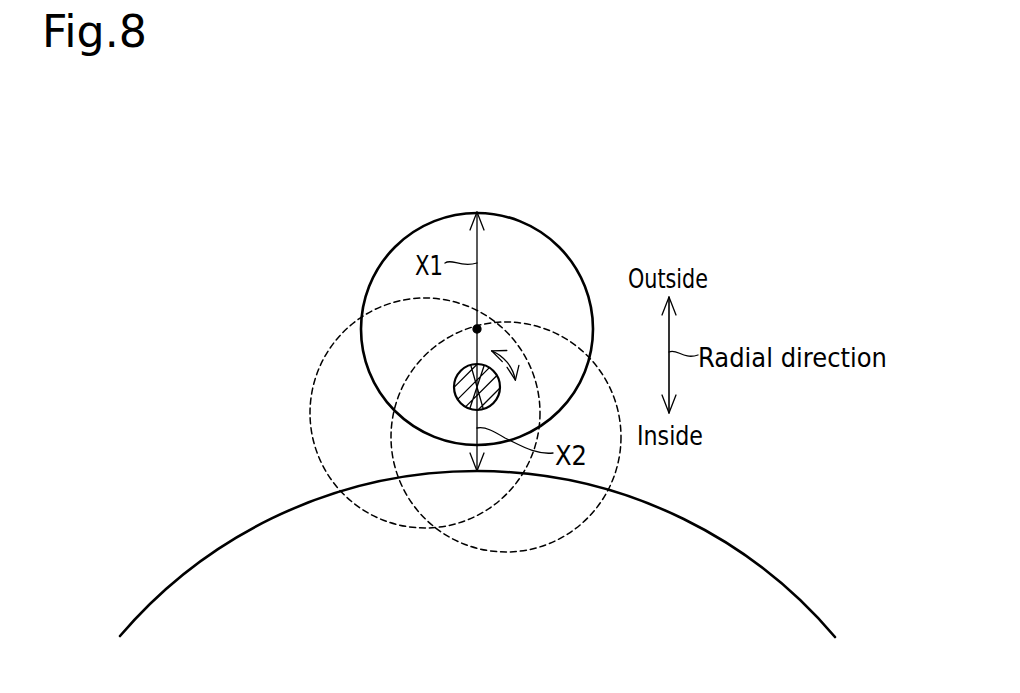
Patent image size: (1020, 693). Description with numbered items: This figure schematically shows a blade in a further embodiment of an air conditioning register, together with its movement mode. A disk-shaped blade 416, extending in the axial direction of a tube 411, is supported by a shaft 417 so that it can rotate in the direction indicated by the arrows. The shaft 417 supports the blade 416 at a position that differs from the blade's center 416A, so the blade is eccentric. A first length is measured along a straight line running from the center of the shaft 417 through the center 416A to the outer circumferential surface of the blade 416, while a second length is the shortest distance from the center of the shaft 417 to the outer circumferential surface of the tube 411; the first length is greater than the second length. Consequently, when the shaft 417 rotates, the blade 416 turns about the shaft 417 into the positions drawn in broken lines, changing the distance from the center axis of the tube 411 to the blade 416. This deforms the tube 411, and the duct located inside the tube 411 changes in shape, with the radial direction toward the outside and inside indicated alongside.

The tube 411 is at (233, 536).
The blade 416 is at (466, 303).
The center 416A is at (477, 329).
The shaft 417 is at (454, 387).